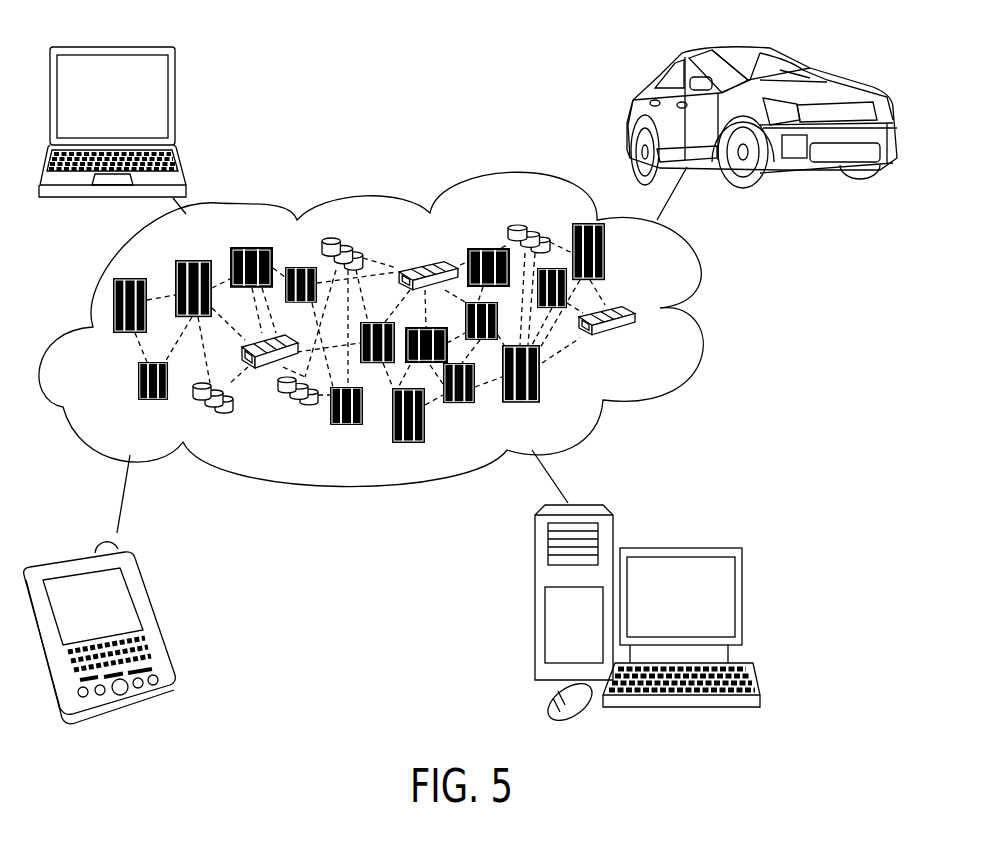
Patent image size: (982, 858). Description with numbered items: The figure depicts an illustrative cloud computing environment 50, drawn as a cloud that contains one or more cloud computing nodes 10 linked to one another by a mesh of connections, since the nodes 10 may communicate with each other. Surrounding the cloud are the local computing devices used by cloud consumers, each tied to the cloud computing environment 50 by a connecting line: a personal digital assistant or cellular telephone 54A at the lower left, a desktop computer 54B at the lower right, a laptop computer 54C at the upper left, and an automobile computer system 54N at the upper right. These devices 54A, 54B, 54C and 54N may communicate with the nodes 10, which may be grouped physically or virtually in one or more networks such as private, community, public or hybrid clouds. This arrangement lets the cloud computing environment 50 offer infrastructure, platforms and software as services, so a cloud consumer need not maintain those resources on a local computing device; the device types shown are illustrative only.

The cloud computing nodes 10 is at (660, 362).
The cloud computing environment 50 is at (697, 262).
The personal digital assistant (PDA) or cellular telephone 54A is at (143, 595).
The desktop computer 54B is at (743, 597).
The laptop computer 54C is at (174, 97).
The automobile computer system 54N is at (810, 68).